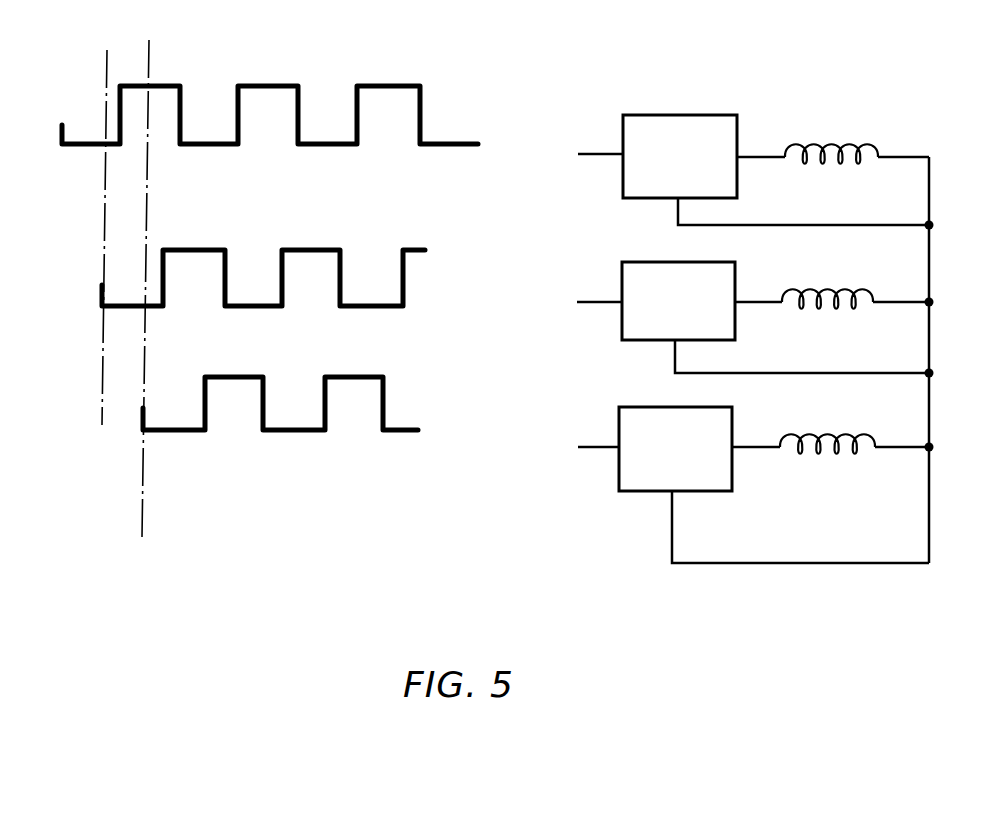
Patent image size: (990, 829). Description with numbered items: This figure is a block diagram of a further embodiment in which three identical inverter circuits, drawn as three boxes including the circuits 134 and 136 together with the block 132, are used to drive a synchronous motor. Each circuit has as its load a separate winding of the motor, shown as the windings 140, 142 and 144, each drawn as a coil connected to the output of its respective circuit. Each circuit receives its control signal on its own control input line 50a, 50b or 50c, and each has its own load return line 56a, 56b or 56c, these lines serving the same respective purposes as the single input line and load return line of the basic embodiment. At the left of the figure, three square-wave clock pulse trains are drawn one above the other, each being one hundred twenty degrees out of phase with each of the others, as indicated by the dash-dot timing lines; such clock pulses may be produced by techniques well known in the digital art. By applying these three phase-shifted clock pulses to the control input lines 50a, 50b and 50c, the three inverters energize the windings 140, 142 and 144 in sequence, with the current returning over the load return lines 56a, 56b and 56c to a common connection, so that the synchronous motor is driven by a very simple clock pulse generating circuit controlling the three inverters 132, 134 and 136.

The control input line 50a is at (604, 154).
The control input line 50b is at (602, 302).
The control input line 50c is at (604, 447).
The phase a driver amplifier 132 is at (737, 133).
The circuit 134 is at (730, 278).
The circuit 136 is at (728, 422).
The winding 140 is at (836, 148).
The winding 142 is at (830, 297).
The winding 144 is at (826, 443).
The load return line 56a is at (783, 225).
The load return line 56b is at (772, 373).
The load return line 56c is at (760, 563).